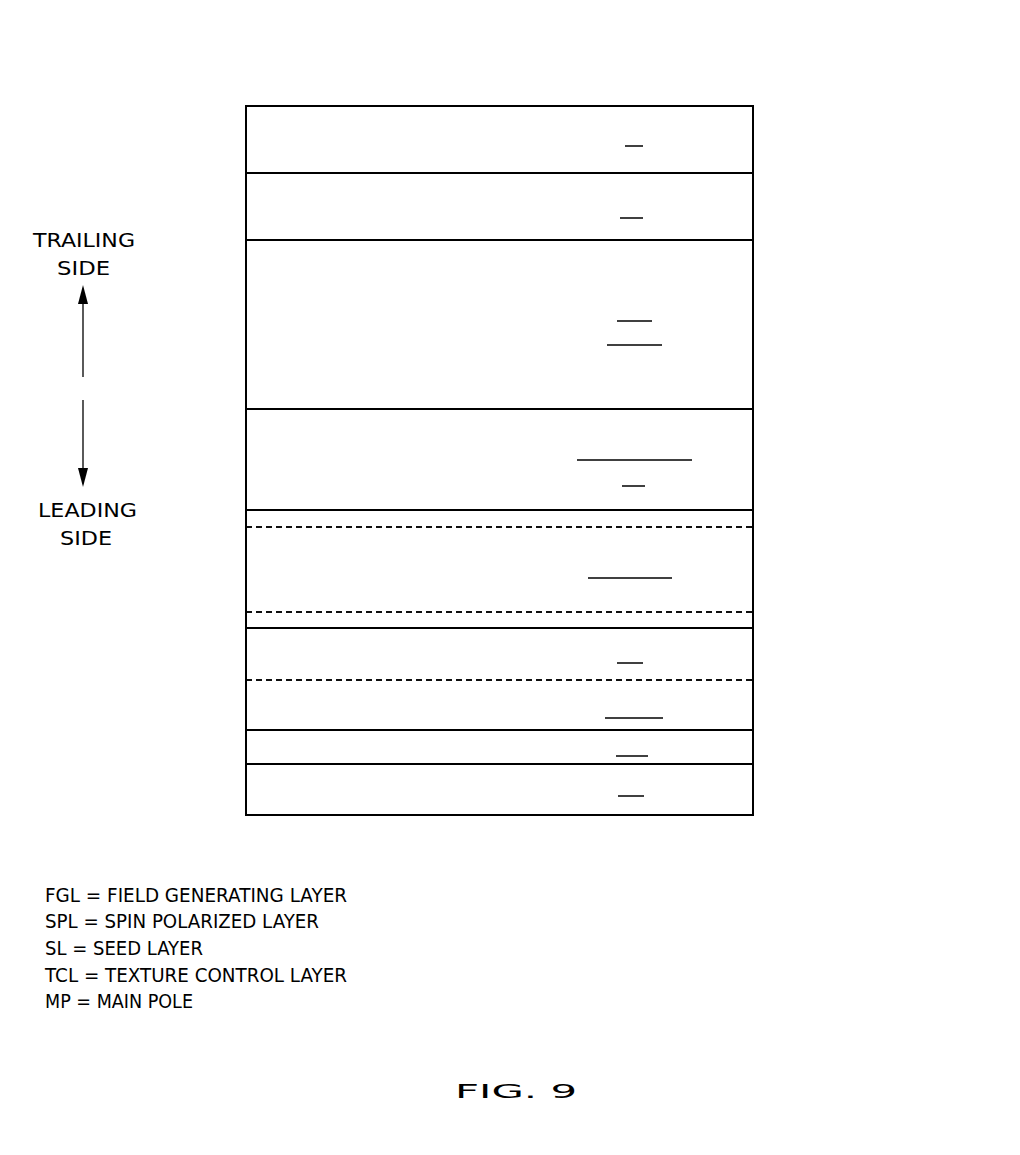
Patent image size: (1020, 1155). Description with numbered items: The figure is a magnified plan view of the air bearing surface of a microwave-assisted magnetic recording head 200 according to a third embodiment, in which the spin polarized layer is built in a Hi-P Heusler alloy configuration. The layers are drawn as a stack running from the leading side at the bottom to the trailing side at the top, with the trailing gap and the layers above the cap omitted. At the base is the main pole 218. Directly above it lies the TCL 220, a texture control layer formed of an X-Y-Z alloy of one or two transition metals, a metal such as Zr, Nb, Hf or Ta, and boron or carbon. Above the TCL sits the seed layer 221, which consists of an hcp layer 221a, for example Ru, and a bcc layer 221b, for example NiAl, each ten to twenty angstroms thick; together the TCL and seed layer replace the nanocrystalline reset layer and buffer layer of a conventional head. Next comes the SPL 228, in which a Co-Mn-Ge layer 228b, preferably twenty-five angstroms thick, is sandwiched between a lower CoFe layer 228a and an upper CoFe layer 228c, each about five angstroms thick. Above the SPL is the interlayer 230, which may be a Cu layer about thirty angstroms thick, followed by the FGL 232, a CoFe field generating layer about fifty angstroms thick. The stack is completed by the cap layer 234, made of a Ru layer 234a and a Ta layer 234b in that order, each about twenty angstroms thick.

The magnetic field-assisted magnetic recording head 200 is at (245, 47).
The cap layer 234 is at (240, 106).
The Ta layer 234b is at (522, 146).
The Ru layer 234a is at (522, 218).
The FGL 232 is at (513, 333).
The interlayer 230 is at (513, 470).
The SPL 228 is at (240, 515).
The CoFe layer 228c is at (742, 521).
The Co-Mn-Ge layer 228b is at (521, 580).
The CoFe layer 228a is at (743, 625).
The seed layer 221 is at (238, 628).
The bcc layer 221b is at (521, 666).
The hcp layer 221a is at (521, 718).
The TCL 220 is at (513, 756).
The main pole 218 is at (513, 796).